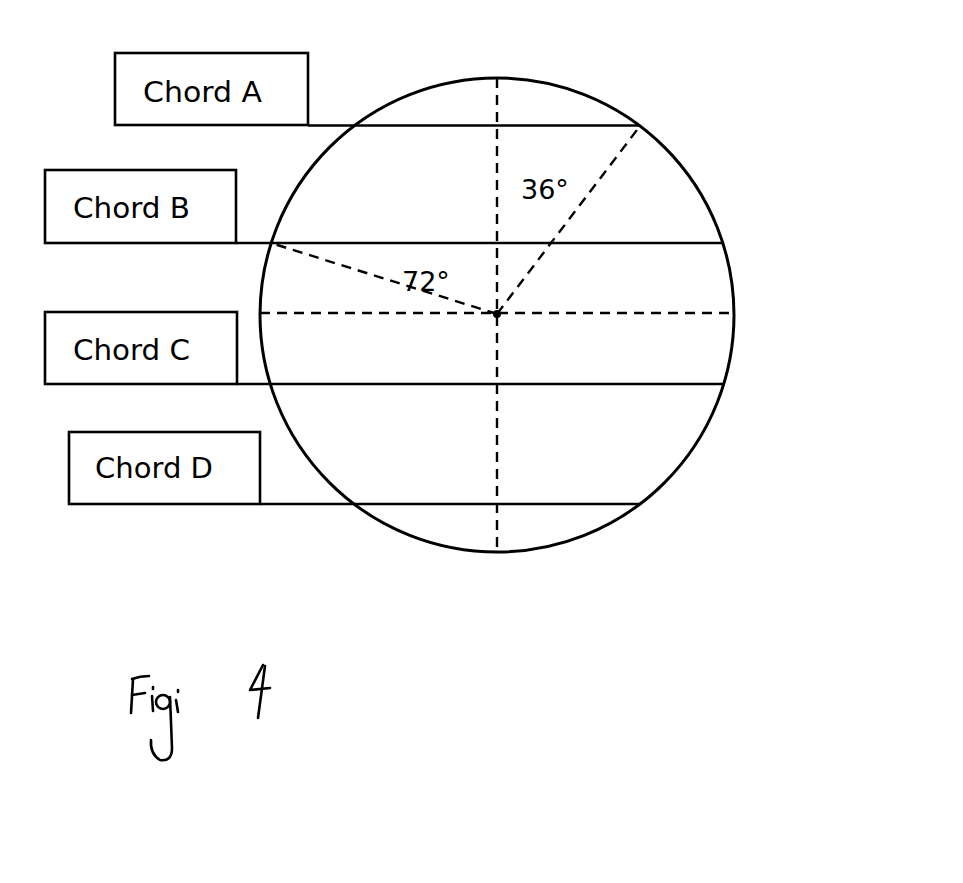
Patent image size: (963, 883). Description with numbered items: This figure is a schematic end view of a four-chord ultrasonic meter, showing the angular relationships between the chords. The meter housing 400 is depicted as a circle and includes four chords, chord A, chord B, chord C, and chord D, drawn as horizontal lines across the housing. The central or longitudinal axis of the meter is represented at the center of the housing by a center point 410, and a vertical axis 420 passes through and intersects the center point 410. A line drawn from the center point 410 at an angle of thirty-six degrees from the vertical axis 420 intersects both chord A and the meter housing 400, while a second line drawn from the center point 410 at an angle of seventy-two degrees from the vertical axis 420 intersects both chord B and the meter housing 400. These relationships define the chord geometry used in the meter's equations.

The meter housing 400 is at (698, 188).
The center point 410 is at (498, 317).
The vertical axis 420 is at (500, 106).